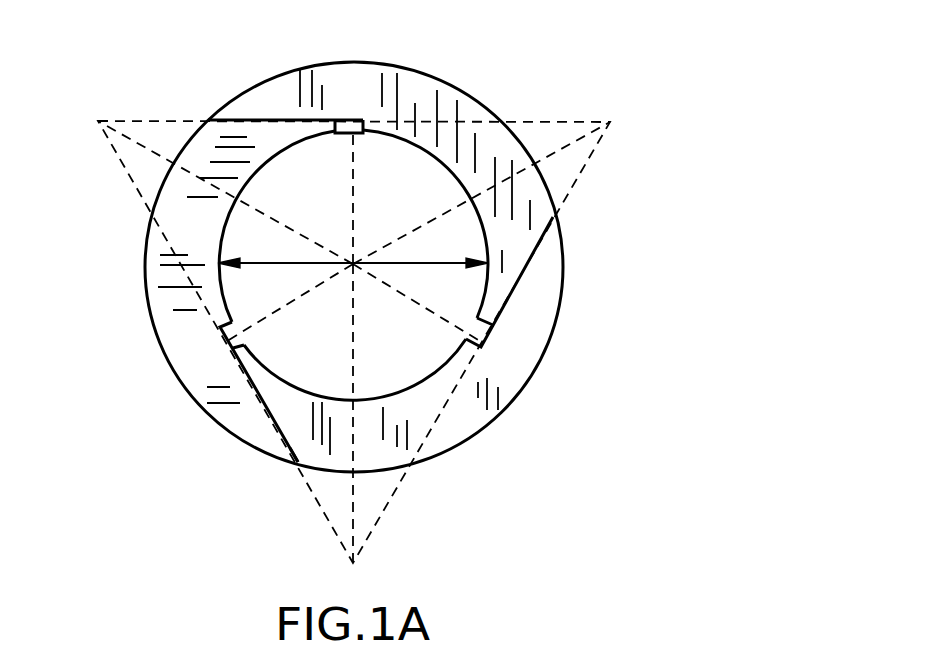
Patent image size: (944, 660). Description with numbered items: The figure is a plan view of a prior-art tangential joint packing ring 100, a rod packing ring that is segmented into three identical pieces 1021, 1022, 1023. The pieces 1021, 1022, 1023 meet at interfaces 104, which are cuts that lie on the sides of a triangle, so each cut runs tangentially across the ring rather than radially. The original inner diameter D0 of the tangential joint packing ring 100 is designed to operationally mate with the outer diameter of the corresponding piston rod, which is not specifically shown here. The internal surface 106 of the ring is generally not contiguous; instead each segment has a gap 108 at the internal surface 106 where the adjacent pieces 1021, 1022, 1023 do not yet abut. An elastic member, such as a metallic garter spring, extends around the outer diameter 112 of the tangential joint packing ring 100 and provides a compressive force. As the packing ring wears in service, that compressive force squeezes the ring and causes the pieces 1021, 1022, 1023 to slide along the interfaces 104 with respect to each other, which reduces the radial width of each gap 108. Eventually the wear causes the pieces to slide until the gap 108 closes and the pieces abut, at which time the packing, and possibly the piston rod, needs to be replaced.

The tangential joint packing ring 100 is at (707, 204).
The first piece 1021 is at (417, 88).
The second piece 1022 is at (520, 372).
The third piece 1023 is at (165, 347).
The interfaces 104 is at (218, 122).
The internal surface 106 is at (410, 388).
The gap 108 is at (353, 130).
The outer diameter 112 is at (280, 455).
The original inner diameter D0 is at (465, 250).